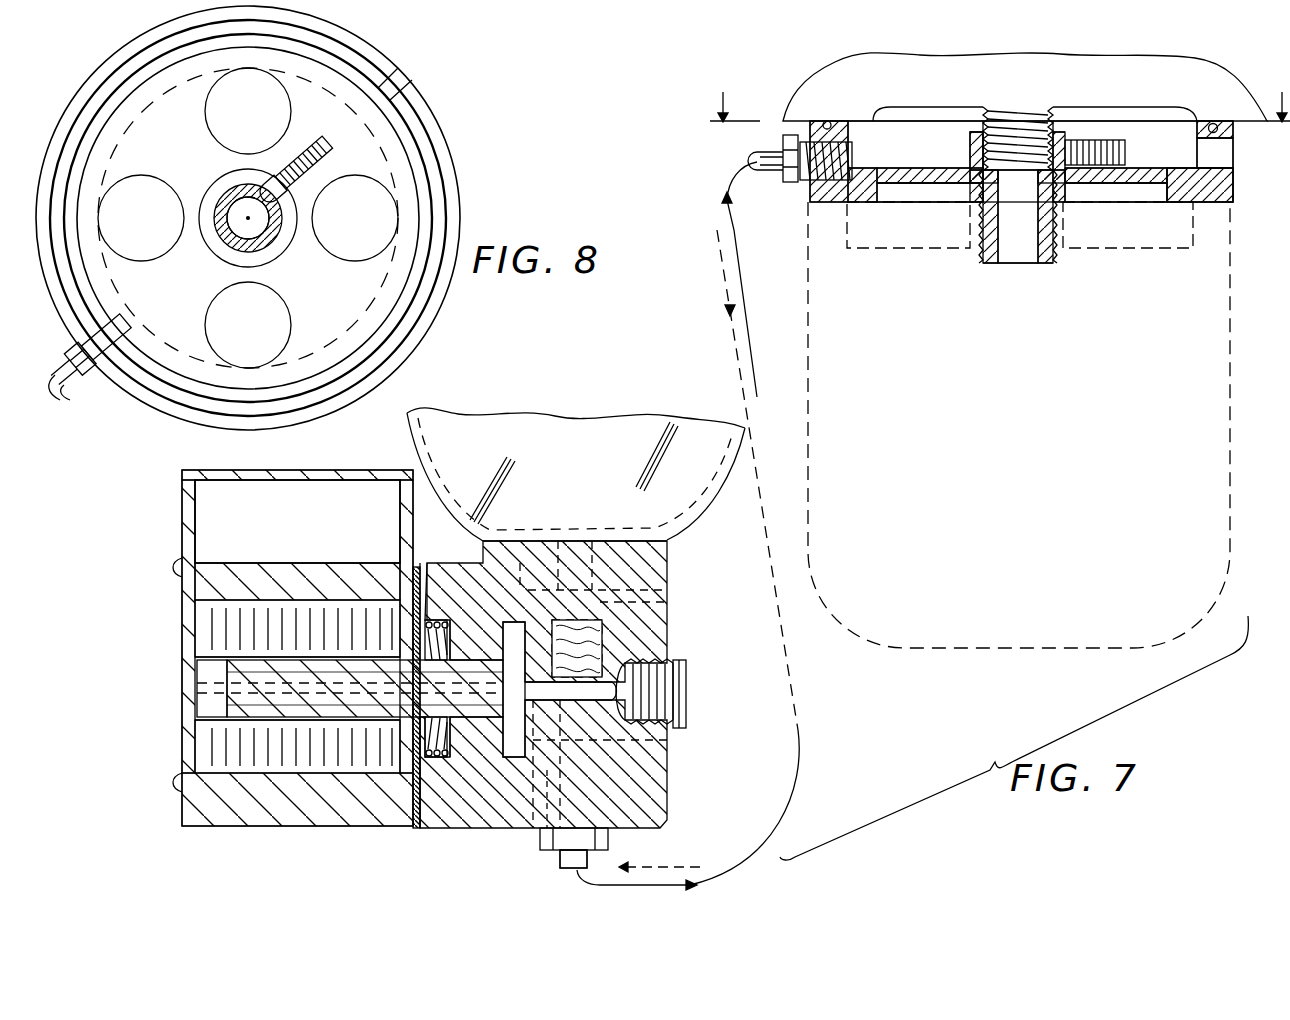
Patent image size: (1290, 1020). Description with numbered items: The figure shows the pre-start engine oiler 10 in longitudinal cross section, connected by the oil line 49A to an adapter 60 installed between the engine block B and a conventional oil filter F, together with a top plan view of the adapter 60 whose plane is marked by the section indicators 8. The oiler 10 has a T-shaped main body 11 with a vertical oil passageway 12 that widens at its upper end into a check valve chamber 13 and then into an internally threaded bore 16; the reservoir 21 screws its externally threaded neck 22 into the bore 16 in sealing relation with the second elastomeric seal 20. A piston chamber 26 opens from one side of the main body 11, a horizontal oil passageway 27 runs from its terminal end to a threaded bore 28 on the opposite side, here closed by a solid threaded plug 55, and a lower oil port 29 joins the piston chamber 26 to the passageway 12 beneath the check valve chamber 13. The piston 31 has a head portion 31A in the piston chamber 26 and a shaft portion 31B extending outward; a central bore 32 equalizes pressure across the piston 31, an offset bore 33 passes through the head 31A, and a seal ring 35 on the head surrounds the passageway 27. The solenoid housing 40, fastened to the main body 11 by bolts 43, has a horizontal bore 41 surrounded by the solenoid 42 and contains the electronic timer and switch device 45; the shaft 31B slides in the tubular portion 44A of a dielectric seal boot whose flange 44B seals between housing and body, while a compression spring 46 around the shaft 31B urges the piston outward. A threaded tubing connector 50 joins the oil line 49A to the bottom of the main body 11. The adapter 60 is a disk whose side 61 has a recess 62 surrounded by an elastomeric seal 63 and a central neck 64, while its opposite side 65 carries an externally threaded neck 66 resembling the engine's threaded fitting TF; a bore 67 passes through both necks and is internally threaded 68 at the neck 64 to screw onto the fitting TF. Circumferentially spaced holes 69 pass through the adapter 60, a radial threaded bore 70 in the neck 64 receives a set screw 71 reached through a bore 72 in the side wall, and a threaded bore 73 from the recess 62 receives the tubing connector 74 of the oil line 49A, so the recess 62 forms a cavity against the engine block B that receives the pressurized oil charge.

In FIG. 7, the engine block B is at (845, 70).
In FIG. 7, the threaded fitting TF is at (1040, 121).
In FIG. 7, the oil filter F is at (1022, 437).
In FIG. 7, the section line of FIG. 8 is at (1289, 88).
In FIG. 7, the pre-start engine oiler 10 is at (606, 406).
In FIG. 7, the main body 11 is at (660, 770).
In FIG. 7, the vertical bore or oil passageway 12 is at (667, 742).
In FIG. 7, the check valve chamber 13 is at (667, 604).
In FIG. 7, the internally threaded bore 16 is at (660, 551).
In FIG. 7, the second elastomeric seal 20 is at (667, 580).
In FIG. 7, the reservoir 21 is at (692, 428).
In FIG. 7, the externally threaded neck 22 is at (622, 564).
In FIG. 7, the piston chamber 26 is at (515, 757).
In FIG. 7, the horizontal bore or oil passageway 27 is at (604, 662).
In FIG. 7, the threaded bore 28 is at (672, 716).
In FIG. 7, the lower horizontal bore or oil port 29 is at (546, 856).
In FIG. 7, the piston member 31 is at (272, 705).
In FIG. 7, the head portion 31A is at (458, 755).
In FIG. 7, the shaft portion 31B is at (235, 706).
In FIG. 7, the central longitudinal bore 32 is at (197, 683).
In FIG. 7, the bore 33 is at (459, 572).
In FIG. 7, the seal ring 35 is at (497, 757).
In FIG. 7, the solenoid housing 40 is at (330, 470).
In FIG. 7, the horizontal bore 41 is at (195, 656).
In FIG. 7, the solenoid 42 is at (205, 625).
In FIG. 7, the bolts 43 is at (172, 565).
In FIG. 7, the closed end tubular portion 44A is at (322, 700).
In FIG. 7, the radial flange portion 44B is at (400, 827).
In FIG. 7, the electronic timer and switch device 45 is at (195, 515).
In FIG. 7, the compression spring 46 is at (435, 618).
In FIG. 8, the oil line 49A is at (66, 402).
In FIG. 7, the oil line 49A is at (758, 153).
In FIG. 7, the threaded tubing connector 50 is at (609, 842).
In FIG. 7, the solid threaded plug 55 is at (687, 672).
In FIG. 8, the adapter 60 is at (474, 176).
In FIG. 8, the side 61 is at (439, 300).
In FIG. 7, the side 61 is at (846, 128).
In FIG. 8, the recess 62 is at (101, 133).
In FIG. 7, the recess 62 is at (848, 130).
In FIG. 8, the elastomeric seal 63 is at (437, 323).
In FIG. 7, the elastomeric seal 63 is at (1213, 123).
In FIG. 8, the central reduced diameter neck 64 is at (218, 176).
In FIG. 7, the central reduced diameter neck 64 is at (970, 150).
In FIG. 7, the opposite side 65 is at (1182, 204).
In FIG. 7, the externally threaded neck 66 is at (1054, 248).
In FIG. 8, the bore 67 is at (263, 236).
In FIG. 7, the bore 67 is at (1018, 258).
In FIG. 8, the internal threads 68 is at (220, 244).
In FIG. 7, the internal threads 68 is at (985, 130).
In FIG. 8, the holes 69 is at (222, 100).
In FIG. 7, the holes 69 is at (893, 198).
In FIG. 8, the threaded bore 70 is at (272, 188).
In FIG. 8, the set screw 71 is at (328, 146).
In FIG. 7, the set screw 71 is at (1125, 151).
In FIG. 8, the bore 72 is at (412, 70).
In FIG. 7, the bore 72 is at (1225, 153).
In FIG. 8, the threaded bore 73 is at (133, 330).
In FIG. 7, the threaded bore 73 is at (808, 184).
In FIG. 8, the threaded tubing connector 74 is at (70, 361).
In FIG. 7, the threaded tubing connector 74 is at (790, 184).